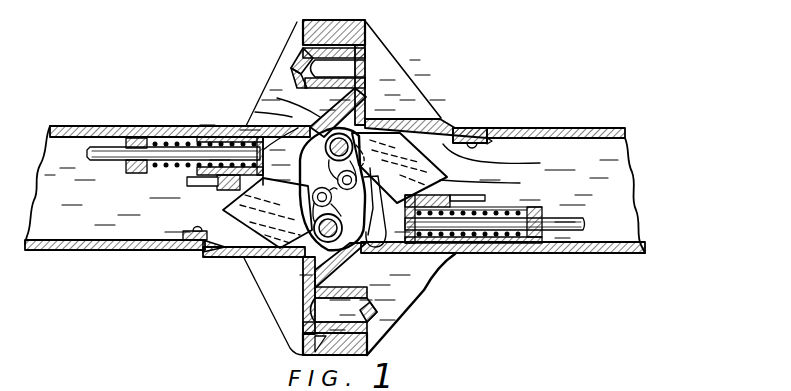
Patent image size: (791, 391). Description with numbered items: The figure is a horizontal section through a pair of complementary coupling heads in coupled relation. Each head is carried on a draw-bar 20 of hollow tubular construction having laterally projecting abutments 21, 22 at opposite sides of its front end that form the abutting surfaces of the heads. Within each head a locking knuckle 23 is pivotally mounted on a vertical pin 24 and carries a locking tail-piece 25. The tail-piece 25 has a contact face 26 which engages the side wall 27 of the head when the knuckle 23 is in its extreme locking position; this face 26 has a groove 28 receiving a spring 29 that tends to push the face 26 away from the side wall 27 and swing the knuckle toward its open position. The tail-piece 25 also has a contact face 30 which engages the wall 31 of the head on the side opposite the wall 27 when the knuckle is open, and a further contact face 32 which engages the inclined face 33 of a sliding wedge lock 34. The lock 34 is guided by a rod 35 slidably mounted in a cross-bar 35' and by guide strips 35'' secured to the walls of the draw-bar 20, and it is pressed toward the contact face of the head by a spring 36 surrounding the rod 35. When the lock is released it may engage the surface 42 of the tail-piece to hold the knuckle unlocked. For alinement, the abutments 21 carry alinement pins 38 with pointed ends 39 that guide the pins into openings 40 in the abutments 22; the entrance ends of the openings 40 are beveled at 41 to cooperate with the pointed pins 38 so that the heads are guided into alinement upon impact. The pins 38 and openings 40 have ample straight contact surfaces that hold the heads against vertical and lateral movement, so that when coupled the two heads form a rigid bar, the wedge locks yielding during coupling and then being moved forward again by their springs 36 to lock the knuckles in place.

The draw-bar 20 is at (585, 152).
The abutment 21 is at (376, 132).
The abutment 22 is at (303, 29).
The locking knuckle 23 is at (300, 126).
The vertical pin 24 is at (308, 218).
The locking tail-piece 25 is at (228, 221).
The contact face 26 is at (397, 122).
The side wall 27 is at (245, 258).
The groove 28 is at (448, 124).
The spring 29 is at (213, 260).
The contact face 30 is at (487, 190).
The wall 31 is at (392, 252).
The contact face 32 is at (354, 154).
The inclined face 33 is at (399, 168).
The sliding wedge lock 34 is at (462, 245).
The rod 35 is at (359, 188).
The cross-bar 35' is at (103, 133).
The guide strips 35'' is at (172, 195).
The spring 36 is at (525, 254).
The alinement pin 38 is at (374, 28).
The pointed end 39 is at (300, 52).
The opening 40 is at (293, 71).
The bevel 41 is at (489, 130).
The surface 42 is at (217, 254).